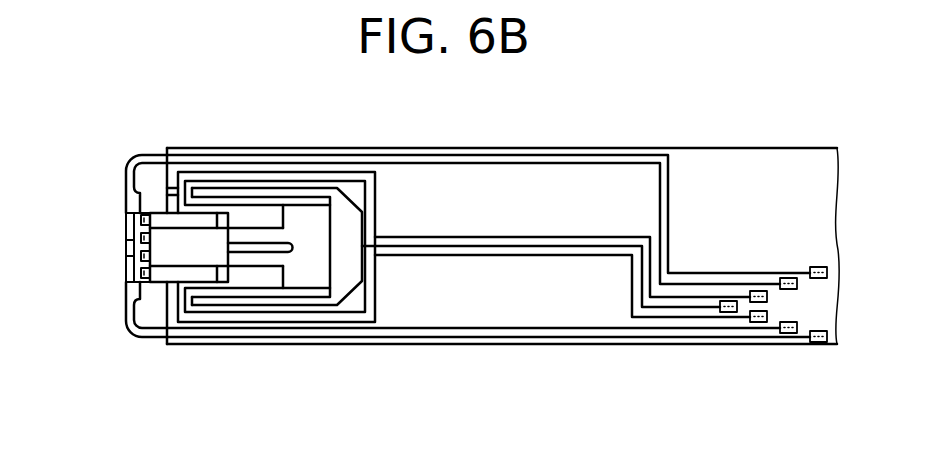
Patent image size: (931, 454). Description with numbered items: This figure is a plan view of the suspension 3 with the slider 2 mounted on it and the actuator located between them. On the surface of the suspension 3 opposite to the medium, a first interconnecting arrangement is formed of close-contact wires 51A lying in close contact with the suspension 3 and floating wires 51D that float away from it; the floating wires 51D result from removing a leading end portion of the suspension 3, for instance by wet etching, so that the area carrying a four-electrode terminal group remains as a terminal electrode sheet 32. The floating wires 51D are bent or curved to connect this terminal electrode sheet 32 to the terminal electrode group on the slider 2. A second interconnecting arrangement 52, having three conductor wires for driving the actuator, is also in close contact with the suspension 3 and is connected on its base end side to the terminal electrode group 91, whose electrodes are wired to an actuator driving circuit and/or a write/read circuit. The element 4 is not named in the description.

The slider 2 is at (163, 250).
The suspension 3 is at (762, 156).
The IC chip 4 is at (307, 230).
The terminal electrode sheet 32 is at (126, 268).
The close-contact wires 51A is at (467, 164).
The floating wires 51D is at (120, 181).
The second interconnecting arrangement 52 is at (591, 256).
The terminal electrode group 91 is at (825, 347).